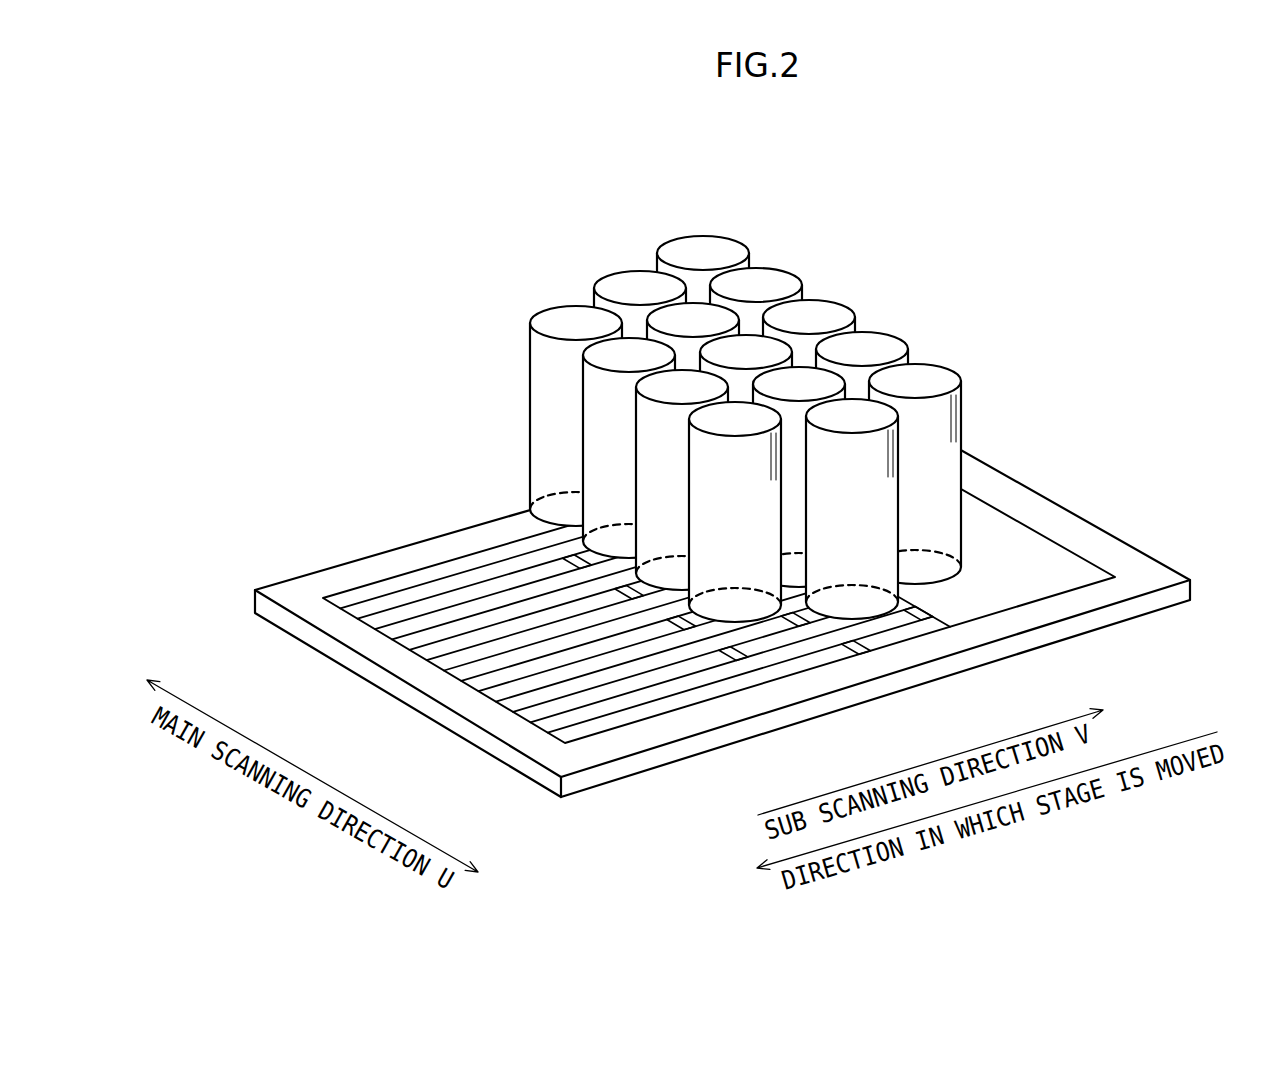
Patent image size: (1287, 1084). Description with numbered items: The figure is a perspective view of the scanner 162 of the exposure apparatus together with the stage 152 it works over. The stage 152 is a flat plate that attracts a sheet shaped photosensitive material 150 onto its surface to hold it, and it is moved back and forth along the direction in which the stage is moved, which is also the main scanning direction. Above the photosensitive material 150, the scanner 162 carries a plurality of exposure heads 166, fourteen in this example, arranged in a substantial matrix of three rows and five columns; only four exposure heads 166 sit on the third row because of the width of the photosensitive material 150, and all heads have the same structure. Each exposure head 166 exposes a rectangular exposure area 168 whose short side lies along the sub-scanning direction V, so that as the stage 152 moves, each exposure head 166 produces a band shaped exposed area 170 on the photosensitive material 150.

The photosensitive material 150 is at (728, 614).
The stage 152 is at (1130, 563).
The scanner 162 is at (728, 458).
The exposure head 166 is at (712, 247).
The exposure area 168 is at (920, 616).
The exposed area 170 is at (578, 731).